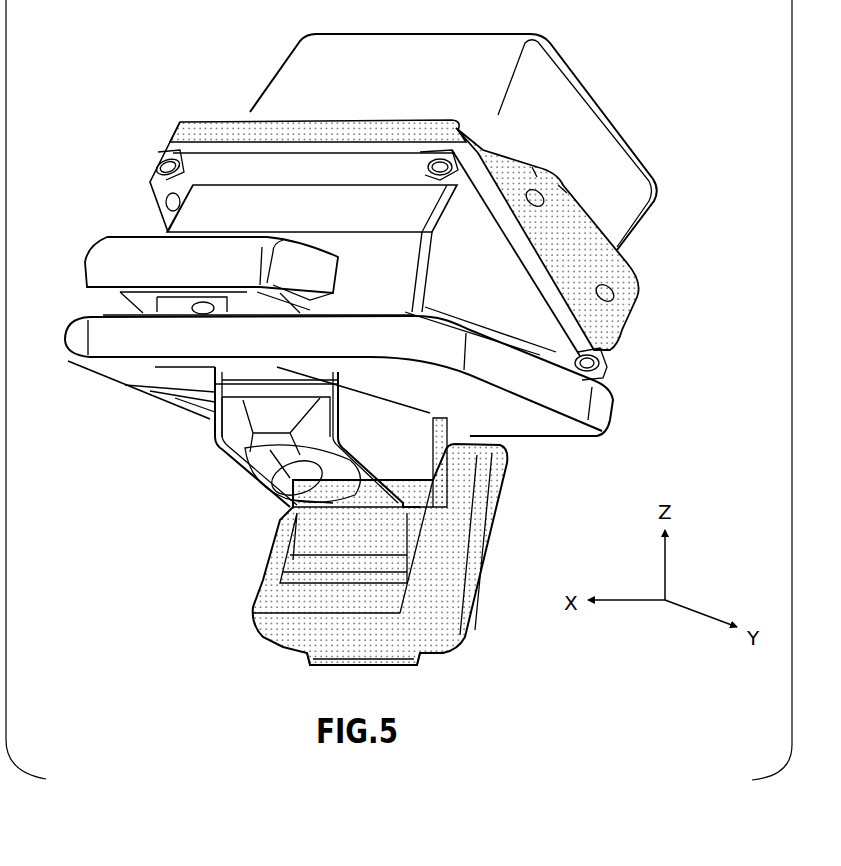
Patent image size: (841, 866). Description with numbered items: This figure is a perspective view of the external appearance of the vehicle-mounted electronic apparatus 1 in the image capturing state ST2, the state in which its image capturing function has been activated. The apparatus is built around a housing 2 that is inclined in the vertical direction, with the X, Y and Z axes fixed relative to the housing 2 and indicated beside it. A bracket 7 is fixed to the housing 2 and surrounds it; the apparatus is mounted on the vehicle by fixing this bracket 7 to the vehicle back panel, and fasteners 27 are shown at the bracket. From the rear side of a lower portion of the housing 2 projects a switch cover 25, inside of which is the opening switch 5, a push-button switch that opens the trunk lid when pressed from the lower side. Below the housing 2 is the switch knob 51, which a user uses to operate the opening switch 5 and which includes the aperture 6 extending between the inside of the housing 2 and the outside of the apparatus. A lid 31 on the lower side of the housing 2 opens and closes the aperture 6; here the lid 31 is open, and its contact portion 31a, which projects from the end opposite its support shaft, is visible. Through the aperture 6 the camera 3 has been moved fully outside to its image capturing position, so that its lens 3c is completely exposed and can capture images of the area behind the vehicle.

The vehicle-mounted electronic apparatus 1 is at (648, 72).
The housing 2 is at (612, 146).
The camera 3 is at (245, 470).
The lens 3c is at (283, 500).
The opening switch 5 is at (170, 307).
The aperture 6 is at (207, 383).
The bracket 7 is at (618, 268).
The switch cover 25 is at (108, 262).
The screw 27 is at (600, 367).
The lid 31 is at (478, 535).
The contact portion 31a is at (365, 665).
The switch knob 51 is at (513, 423).
The image capturing state ST2 is at (184, 49).